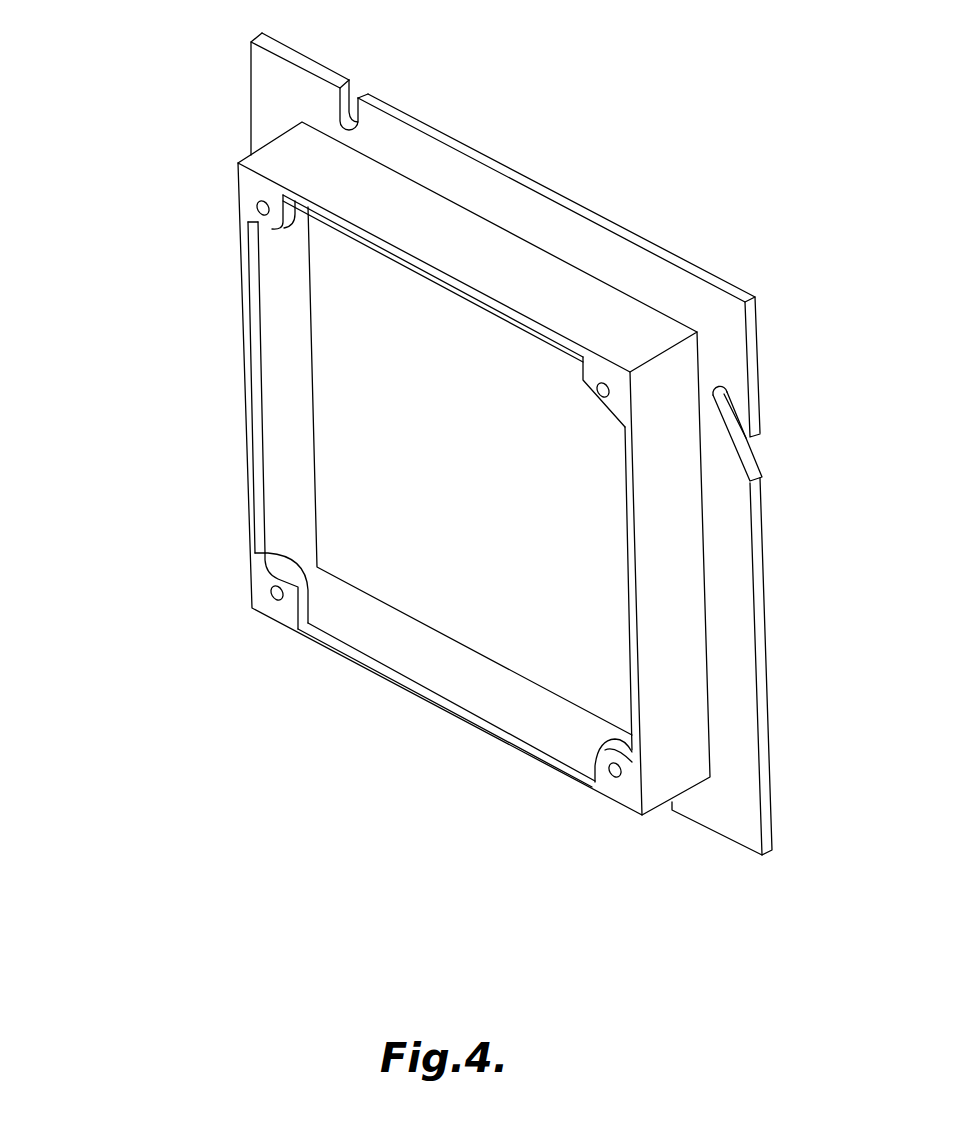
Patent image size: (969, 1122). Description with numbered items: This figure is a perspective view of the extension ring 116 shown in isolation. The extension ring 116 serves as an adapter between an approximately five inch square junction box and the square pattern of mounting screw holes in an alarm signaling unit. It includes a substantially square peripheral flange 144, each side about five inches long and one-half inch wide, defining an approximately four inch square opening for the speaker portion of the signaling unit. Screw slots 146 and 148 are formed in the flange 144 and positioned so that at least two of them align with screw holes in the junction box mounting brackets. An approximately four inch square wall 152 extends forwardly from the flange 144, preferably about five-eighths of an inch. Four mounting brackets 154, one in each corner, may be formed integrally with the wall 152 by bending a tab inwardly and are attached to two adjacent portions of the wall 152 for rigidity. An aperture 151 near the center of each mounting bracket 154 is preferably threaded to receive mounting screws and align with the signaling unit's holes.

The extension ring 116 is at (146, 551).
The peripheral flange 144 is at (722, 664).
The screw slot 146 is at (753, 453).
The screw slot 148 is at (340, 104).
The aperture 151 is at (257, 209).
The wall 152 is at (675, 616).
The mounting bracket 154 is at (272, 229).